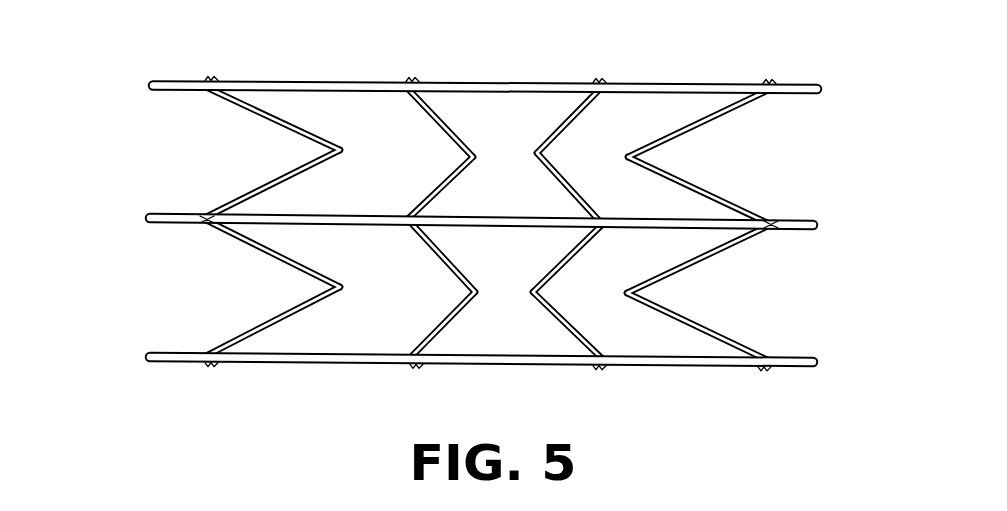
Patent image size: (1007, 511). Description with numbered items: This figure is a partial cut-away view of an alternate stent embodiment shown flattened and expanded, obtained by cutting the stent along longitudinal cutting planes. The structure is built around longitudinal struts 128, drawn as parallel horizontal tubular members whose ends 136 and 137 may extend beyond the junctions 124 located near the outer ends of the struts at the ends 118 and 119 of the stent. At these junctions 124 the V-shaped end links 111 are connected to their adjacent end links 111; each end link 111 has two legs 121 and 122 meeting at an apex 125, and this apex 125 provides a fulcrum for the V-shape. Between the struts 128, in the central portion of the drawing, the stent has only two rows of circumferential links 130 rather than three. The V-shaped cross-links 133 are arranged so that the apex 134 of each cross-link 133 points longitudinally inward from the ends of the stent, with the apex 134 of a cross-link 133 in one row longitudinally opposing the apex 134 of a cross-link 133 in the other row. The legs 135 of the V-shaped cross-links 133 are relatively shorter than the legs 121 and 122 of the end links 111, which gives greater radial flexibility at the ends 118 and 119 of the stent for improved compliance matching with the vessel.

The V-shaped end link 111 is at (292, 117).
The end of the stent 118 is at (139, 231).
The end of the stent 119 is at (834, 222).
The leg of V-shaped end link 121 is at (286, 177).
The leg of V-shaped end link 122 is at (254, 112).
The junction 124 is at (208, 222).
The apex 125 is at (347, 288).
The longitudinal strut 128 is at (515, 81).
The circumferential link 130 is at (444, 334).
The V-shaped cross-link 133 is at (436, 182).
The apex of cross-link 134 is at (477, 155).
The leg of V-shaped cross-link 135 is at (561, 165).
The end of longitudinal strut 136 is at (170, 90).
The end of longitudinal strut 137 is at (803, 94).